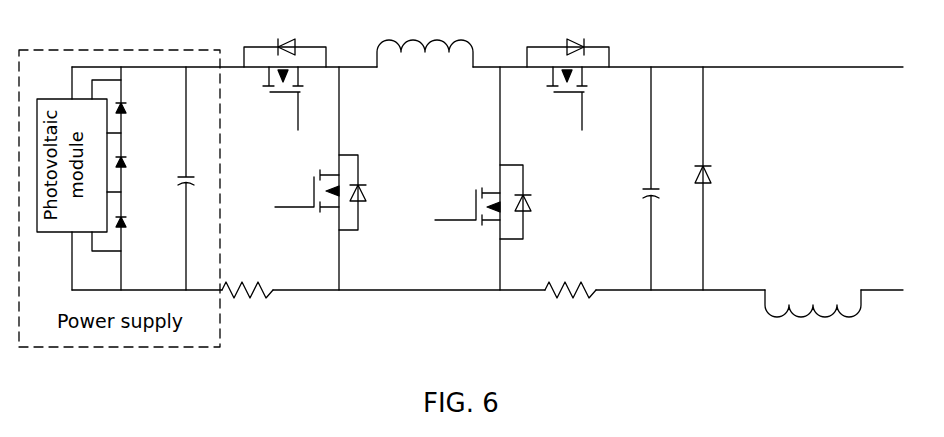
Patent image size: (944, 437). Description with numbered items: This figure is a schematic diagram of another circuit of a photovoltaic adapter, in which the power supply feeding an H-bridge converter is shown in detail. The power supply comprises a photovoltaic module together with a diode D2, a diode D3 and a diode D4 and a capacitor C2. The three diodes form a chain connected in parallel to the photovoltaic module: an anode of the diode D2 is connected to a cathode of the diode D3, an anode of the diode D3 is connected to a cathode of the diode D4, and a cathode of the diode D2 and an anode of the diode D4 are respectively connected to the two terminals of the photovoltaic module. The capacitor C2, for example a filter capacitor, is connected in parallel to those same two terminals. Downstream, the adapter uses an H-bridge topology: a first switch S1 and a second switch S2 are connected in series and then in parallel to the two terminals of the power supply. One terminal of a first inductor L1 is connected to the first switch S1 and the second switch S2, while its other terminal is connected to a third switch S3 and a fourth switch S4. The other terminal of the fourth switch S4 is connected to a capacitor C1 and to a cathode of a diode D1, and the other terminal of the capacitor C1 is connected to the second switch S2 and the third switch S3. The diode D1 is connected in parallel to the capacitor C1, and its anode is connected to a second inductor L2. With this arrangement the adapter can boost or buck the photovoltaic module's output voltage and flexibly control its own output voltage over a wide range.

The first switch S1 is at (285, 70).
The second switch S2 is at (338, 178).
The third switch S3 is at (499, 178).
The fourth switch S4 is at (568, 70).
The first inductor L1 is at (425, 38).
The second inductor L2 is at (813, 319).
The capacitor C1 is at (668, 178).
The capacitor C2 is at (203, 178).
The diode D1 is at (722, 178).
The diode D2 is at (139, 108).
The diode D3 is at (139, 162).
The diode D4 is at (139, 222).